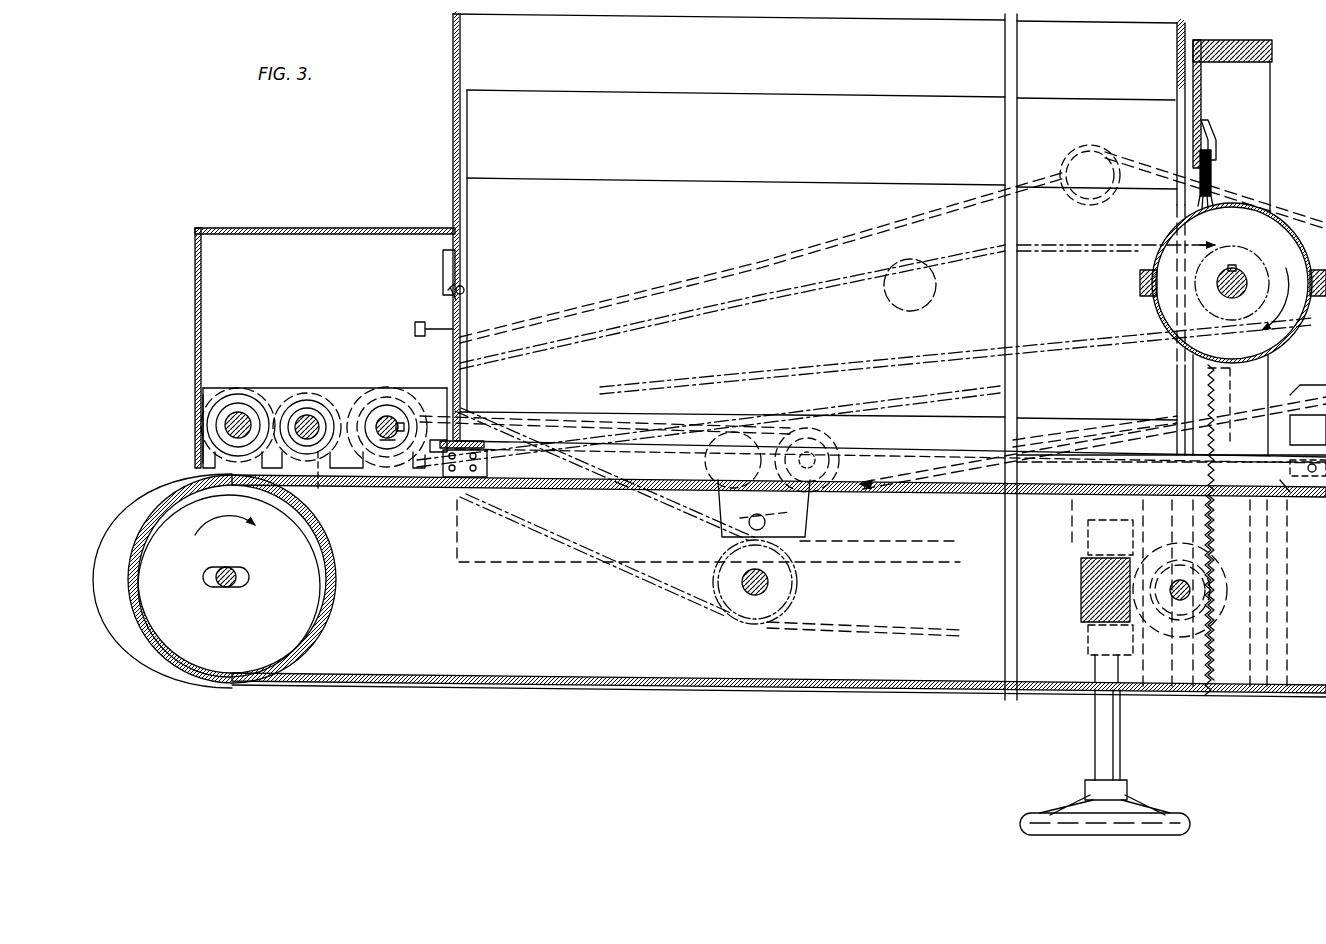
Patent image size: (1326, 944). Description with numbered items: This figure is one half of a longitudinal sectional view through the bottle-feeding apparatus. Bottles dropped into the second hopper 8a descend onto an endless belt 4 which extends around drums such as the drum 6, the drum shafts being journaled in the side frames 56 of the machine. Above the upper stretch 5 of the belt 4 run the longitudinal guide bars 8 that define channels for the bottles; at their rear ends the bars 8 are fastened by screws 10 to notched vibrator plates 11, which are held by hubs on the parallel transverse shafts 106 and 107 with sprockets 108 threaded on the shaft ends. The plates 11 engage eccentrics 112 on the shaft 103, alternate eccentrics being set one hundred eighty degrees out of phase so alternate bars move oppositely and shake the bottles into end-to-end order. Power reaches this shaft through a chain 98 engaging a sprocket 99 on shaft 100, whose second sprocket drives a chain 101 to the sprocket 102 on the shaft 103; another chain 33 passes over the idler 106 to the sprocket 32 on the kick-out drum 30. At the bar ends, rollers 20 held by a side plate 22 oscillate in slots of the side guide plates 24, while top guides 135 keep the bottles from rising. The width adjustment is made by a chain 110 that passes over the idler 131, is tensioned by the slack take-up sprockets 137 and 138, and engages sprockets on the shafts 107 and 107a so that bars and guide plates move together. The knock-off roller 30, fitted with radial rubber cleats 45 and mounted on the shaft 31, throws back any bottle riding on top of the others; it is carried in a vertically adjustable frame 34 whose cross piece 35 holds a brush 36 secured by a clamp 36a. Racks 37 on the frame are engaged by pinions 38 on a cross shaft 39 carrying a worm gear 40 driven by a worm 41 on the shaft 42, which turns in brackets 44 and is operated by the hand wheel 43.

The second hopper 8a is at (453, 112).
The endless belt 4 is at (1025, 48).
The guide bars 8 is at (172, 335).
The cross piece 35 is at (1200, 97).
The clamp 36a is at (1212, 135).
The brush 36 is at (1210, 185).
The vertically adjustable frame 34 is at (1268, 195).
The knock-off roller 30 is at (1152, 308).
The shaft 31 is at (1244, 277).
The sprocket 32 is at (1248, 322).
The strips or cleats 45 is at (1140, 292).
The idler 131 is at (1090, 203).
The idler 106 is at (930, 305).
The chain 110 is at (648, 300).
The chain 33 is at (722, 308).
The shaft 107 is at (240, 420).
The vibrator plates 11 is at (285, 418).
The shaft 107a is at (318, 420).
The shaft 103 is at (390, 420).
The sprocket 102 is at (383, 398).
The sprockets 108 is at (202, 440).
The eccentrics 112 is at (385, 445).
The upper stretch 5 is at (405, 470).
The screws 10 is at (485, 462).
The slack take-up sprocket 137 is at (755, 435).
The slack take-up sprocket 138 is at (835, 438).
The racks 37 is at (1205, 395).
The side guide plates 24 is at (1285, 435).
The rollers 20 is at (1310, 460).
The top guides 135 is at (1322, 370).
The side plate 22 is at (1286, 495).
The brackets 44 is at (1072, 530).
The worm 41 is at (1081, 605).
The worm gear 40 is at (1230, 560).
The pinions 38 is at (1150, 550).
The cross shaft 39 is at (1190, 592).
The shaft 42 is at (1120, 735).
The hand wheel 43 is at (1170, 810).
The drum 6 is at (320, 610).
The side frames 56 is at (155, 665).
The chain 101 is at (672, 598).
The sprocket 99 is at (795, 594).
The shaft 100 is at (750, 596).
The chain 98 is at (905, 545).